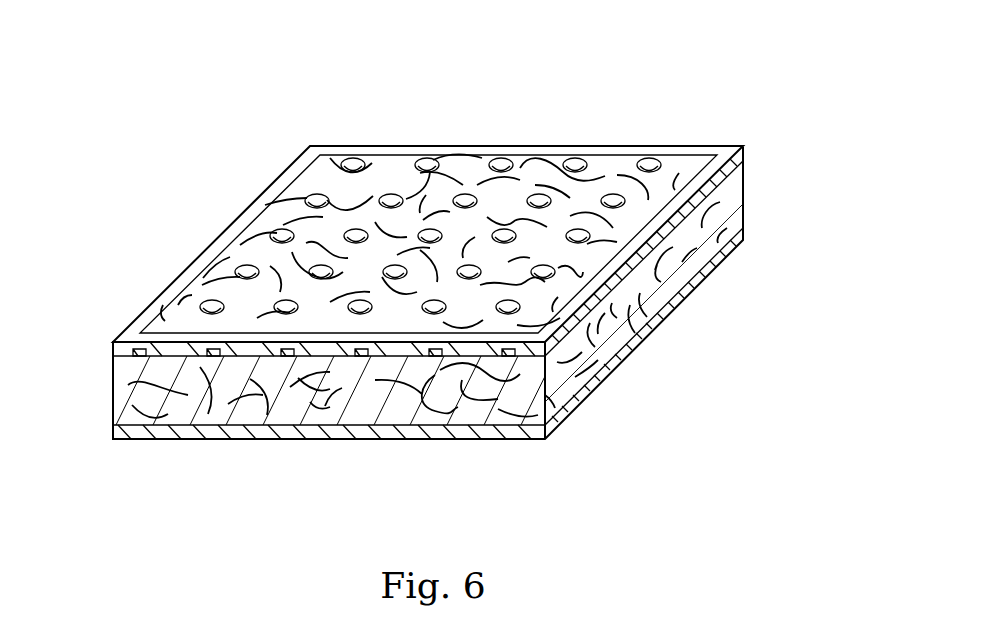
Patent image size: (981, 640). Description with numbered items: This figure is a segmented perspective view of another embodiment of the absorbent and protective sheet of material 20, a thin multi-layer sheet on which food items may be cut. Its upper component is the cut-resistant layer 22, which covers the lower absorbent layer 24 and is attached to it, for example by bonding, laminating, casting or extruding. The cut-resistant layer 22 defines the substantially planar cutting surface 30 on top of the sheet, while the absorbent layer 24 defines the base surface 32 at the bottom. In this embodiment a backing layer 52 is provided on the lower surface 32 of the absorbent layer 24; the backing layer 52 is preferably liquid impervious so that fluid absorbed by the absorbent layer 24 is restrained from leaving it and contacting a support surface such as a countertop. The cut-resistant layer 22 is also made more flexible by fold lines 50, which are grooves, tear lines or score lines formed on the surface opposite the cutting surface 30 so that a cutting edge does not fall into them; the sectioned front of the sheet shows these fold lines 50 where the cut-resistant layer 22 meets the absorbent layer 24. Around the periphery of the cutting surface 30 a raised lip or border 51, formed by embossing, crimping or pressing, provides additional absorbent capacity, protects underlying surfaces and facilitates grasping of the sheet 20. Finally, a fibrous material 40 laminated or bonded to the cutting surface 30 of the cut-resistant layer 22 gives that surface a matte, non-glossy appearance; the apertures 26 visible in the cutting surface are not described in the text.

The absorbent and protective sheet of material 20 is at (784, 88).
The cut-resistant layer 22 is at (743, 147).
The absorbent layer 24 is at (703, 248).
The apertures 26 is at (652, 166).
The cutting surface 30 is at (543, 168).
The base surface 32 is at (477, 412).
The fibrous material 40 is at (377, 168).
The fold lines 50 is at (145, 357).
The raised lip or border 51 is at (130, 333).
The backing layer 52 is at (587, 390).